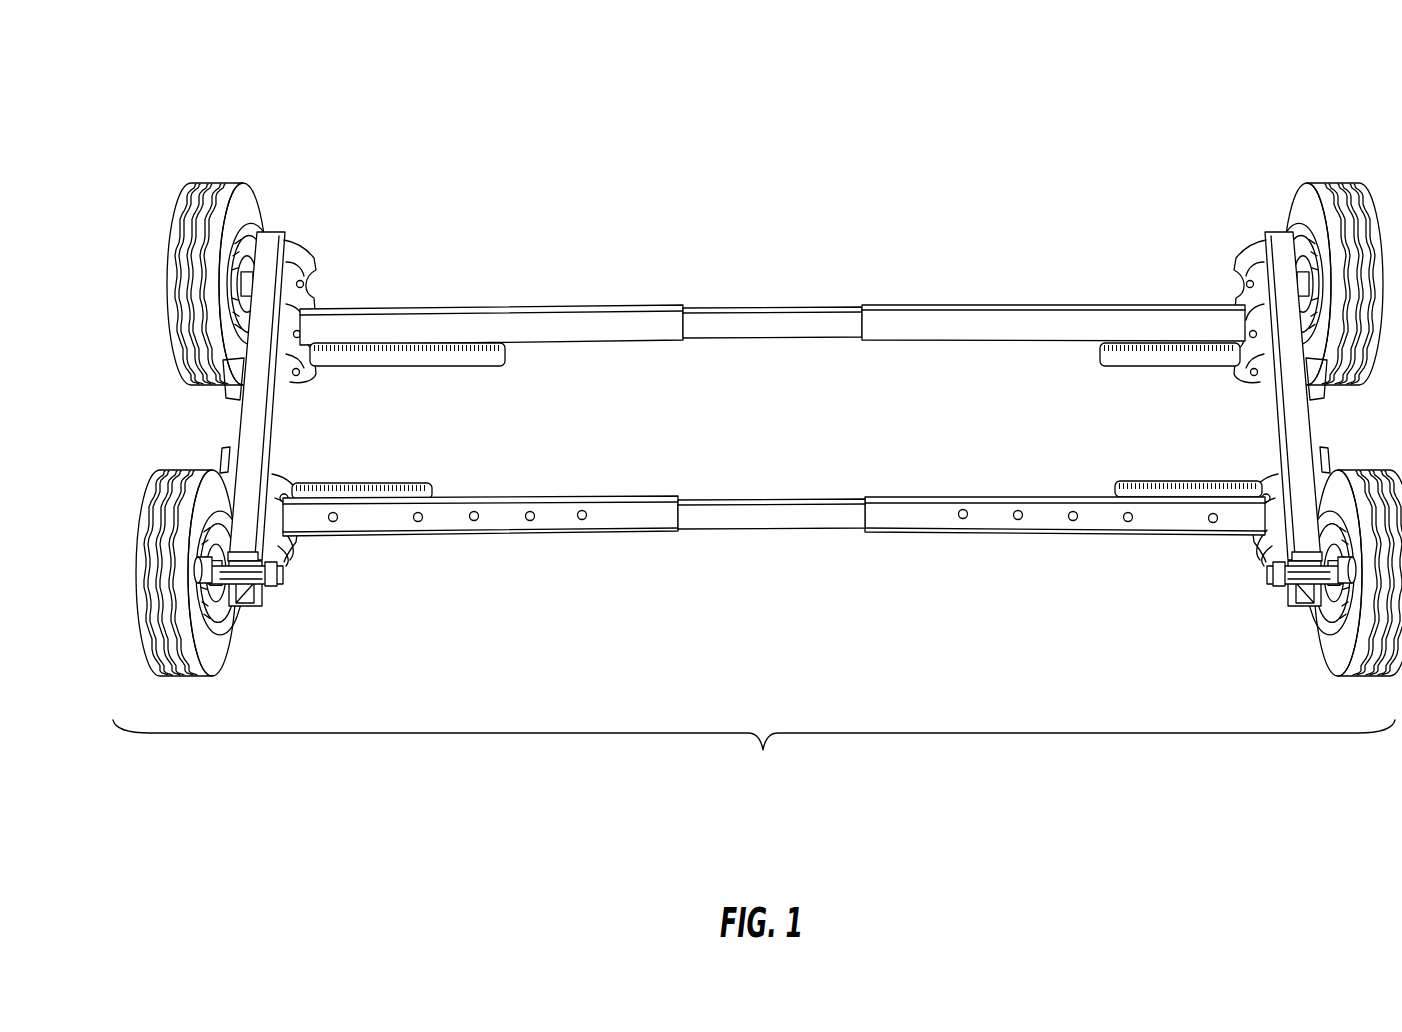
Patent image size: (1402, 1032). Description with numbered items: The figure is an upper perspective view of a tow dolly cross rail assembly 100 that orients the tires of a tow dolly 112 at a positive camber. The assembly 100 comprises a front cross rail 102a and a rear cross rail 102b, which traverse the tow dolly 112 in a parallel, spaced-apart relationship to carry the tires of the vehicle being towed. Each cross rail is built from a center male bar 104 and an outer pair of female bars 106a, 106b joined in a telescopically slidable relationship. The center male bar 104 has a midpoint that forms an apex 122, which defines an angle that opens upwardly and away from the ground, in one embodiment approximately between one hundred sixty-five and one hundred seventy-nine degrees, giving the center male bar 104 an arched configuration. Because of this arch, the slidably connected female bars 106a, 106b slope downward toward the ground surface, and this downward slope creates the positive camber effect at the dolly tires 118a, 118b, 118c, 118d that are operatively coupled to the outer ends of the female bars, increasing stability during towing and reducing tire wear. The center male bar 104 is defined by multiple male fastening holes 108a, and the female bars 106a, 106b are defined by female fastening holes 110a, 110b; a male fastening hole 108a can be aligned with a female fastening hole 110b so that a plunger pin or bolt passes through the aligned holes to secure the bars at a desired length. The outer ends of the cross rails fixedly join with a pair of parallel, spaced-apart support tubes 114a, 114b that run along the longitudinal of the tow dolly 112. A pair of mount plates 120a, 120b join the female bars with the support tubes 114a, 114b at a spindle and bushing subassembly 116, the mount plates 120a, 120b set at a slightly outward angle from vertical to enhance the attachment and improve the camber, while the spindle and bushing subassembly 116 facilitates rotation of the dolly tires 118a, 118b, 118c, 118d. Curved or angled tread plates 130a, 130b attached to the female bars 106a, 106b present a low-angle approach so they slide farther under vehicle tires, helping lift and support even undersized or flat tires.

The tow dolly cross rail assembly 100 is at (280, 62).
The front cross rail 102a is at (774, 516).
The rear cross rail 102b is at (772, 306).
The center male bar 104 is at (771, 524).
The female bar 106a is at (480, 488).
The female bar 106b is at (1063, 489).
The male fastening hole 108a is at (419, 522).
The female fastening hole 110a is at (609, 524).
The female fastening hole 110b is at (916, 526).
The tow dolly 112 is at (754, 759).
The support tube 114a is at (270, 394).
The support tube 114b is at (1280, 394).
The spindle and bushing subassembly 116 is at (276, 568).
The tow dolly tire 118a is at (210, 662).
The tow dolly tire 118b is at (1330, 660).
The dolly tire 118c is at (236, 200).
The dolly tire 118d is at (1305, 214).
The mount plate 120a is at (283, 514).
The mount plate 120b is at (1263, 512).
The apex 122 is at (777, 497).
The tread plate 130a is at (437, 356).
The tread plate 130b is at (1103, 352).